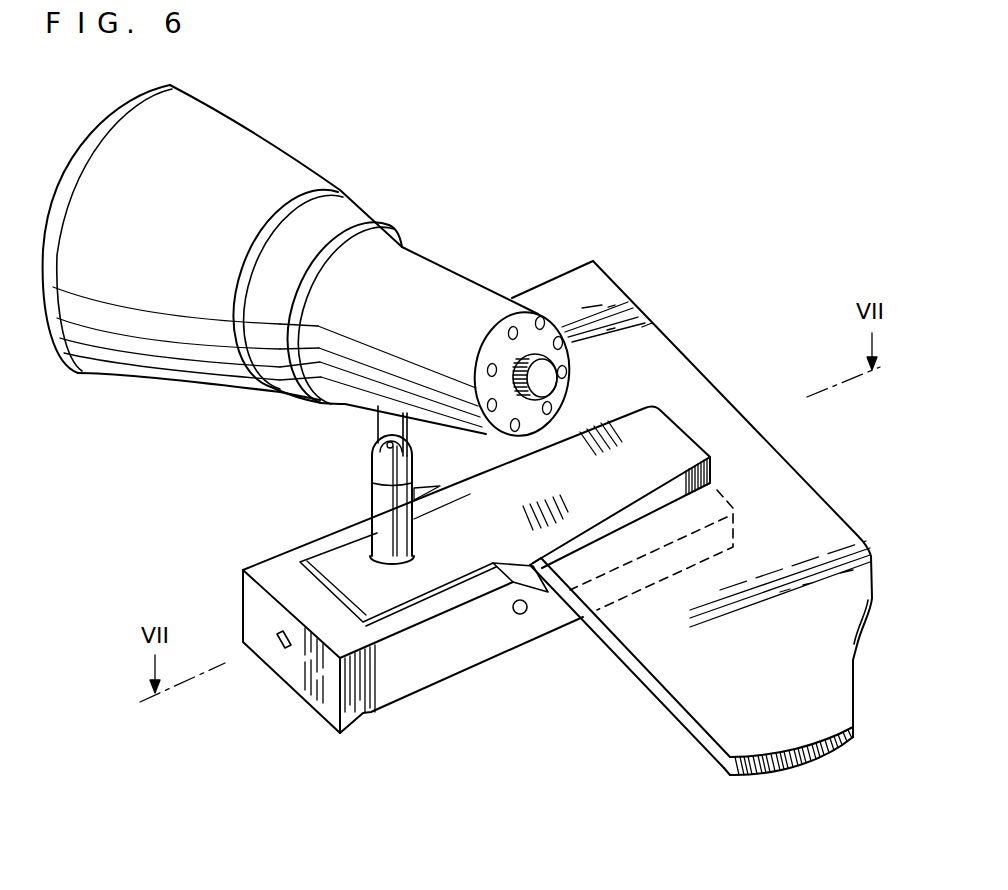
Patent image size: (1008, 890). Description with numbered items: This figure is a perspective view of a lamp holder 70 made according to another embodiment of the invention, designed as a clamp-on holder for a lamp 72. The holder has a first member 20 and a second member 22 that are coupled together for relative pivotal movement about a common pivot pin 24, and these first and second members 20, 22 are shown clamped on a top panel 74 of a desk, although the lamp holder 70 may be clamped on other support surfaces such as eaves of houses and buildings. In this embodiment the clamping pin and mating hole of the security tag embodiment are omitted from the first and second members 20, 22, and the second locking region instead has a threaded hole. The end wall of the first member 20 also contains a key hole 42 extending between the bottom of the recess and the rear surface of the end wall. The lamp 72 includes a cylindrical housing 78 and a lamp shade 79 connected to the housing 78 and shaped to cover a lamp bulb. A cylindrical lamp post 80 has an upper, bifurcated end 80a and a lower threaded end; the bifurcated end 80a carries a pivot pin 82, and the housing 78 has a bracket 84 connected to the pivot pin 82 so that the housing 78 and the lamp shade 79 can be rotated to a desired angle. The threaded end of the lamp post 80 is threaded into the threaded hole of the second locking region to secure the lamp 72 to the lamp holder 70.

The first member 20 is at (484, 652).
The second member 22 is at (683, 440).
The pivot pin 24 is at (522, 616).
The key hole 42 is at (283, 647).
The lamp holder 70 is at (402, 726).
The lamp 72 is at (288, 386).
The top panel 74 is at (716, 730).
The cylindrical housing 78 is at (457, 300).
The lamp shade 79 is at (145, 348).
The cylindrical lamp post 80 is at (412, 531).
The bifurcated end 80a is at (378, 454).
The pivot pin 82 is at (380, 490).
The bracket 84 is at (385, 420).